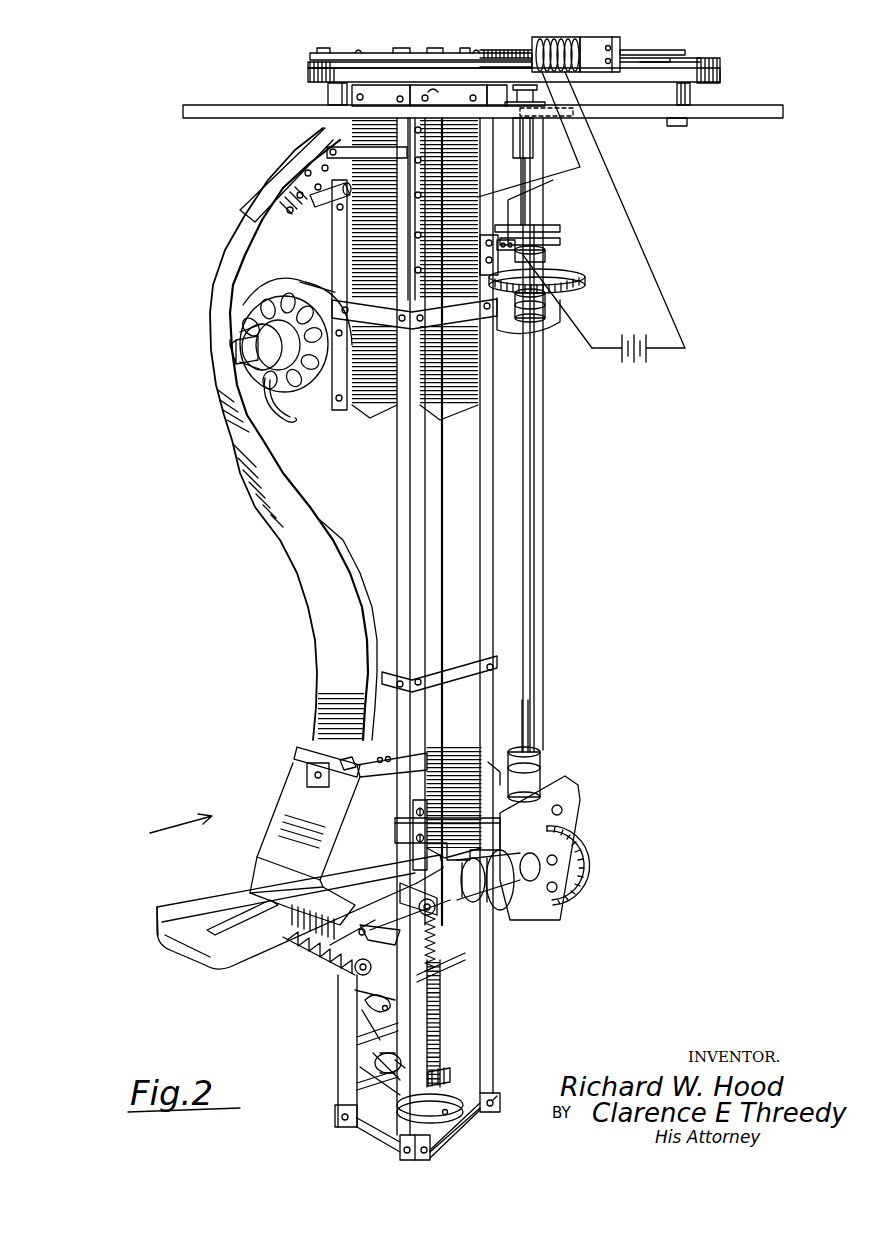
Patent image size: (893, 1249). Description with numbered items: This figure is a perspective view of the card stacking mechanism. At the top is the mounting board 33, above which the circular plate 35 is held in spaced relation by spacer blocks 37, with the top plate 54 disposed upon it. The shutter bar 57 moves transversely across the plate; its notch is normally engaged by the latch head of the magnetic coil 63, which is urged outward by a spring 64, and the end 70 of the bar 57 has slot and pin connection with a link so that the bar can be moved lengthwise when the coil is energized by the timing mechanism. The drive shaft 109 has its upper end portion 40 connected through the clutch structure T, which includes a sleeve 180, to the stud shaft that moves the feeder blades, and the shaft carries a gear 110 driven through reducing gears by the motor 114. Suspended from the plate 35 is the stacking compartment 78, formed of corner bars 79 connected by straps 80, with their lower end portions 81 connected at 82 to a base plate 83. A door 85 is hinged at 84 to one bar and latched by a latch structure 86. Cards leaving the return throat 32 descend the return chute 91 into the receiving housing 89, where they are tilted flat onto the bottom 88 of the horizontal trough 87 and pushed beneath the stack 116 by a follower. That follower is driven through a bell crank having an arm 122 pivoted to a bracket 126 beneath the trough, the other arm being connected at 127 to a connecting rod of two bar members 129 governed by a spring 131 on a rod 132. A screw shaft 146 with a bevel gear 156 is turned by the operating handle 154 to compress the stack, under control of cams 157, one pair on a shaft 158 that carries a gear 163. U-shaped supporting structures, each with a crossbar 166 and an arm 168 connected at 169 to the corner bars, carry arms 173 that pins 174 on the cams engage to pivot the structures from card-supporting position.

The mounting board 33 is at (217, 118).
The bar 57 is at (373, 56).
The top plate 54 is at (308, 64).
The circular plate 35 is at (308, 76).
The spacer blocks 37 is at (335, 95).
The magnetic coil 63 is at (560, 38).
The spring 64 is at (522, 49).
The end of the bar 70 is at (652, 50).
The clutch structure T is at (581, 217).
The sleeve 180 is at (534, 148).
The upper end portion of drive shaft 40 is at (530, 207).
The gear 110 is at (578, 289).
The stacking compartment 78 is at (466, 438).
The drive shaft 109 is at (532, 499).
The corner bars 79 is at (490, 563).
The hinge 84 is at (445, 179).
The bands or straps 80 is at (478, 322).
The door 85 is at (345, 235).
The latch structure 86 is at (300, 202).
The return throat 32 is at (294, 166).
The return chute 91 is at (275, 533).
The motor 114 is at (298, 400).
The stack of cards 116 is at (516, 742).
The slot and pin connection 169 is at (542, 775).
The arm 168 is at (540, 796).
The crossbar 166 is at (490, 836).
The gear 163 is at (580, 862).
The cams 157 is at (520, 900).
The pins 174 is at (460, 962).
The arm 173 is at (503, 948).
The receiving housing 89 is at (283, 812).
The bottom wall 88 is at (196, 943).
The trough 87 is at (216, 912).
The bar members 129 is at (335, 950).
The spring 131 is at (340, 962).
The connection 127 is at (366, 972).
The arm of bell crank 122 is at (404, 922).
The bracket 126 is at (323, 960).
The rod 132 is at (355, 990).
The operating handle 154 is at (325, 1030).
The lower end portions 81 is at (496, 1030).
The screw shaft 146 is at (441, 1021).
The bevel gear 156 is at (450, 1074).
The shaft 158 is at (405, 1090).
The connection 82 is at (494, 1102).
The base plate 83 is at (472, 1130).